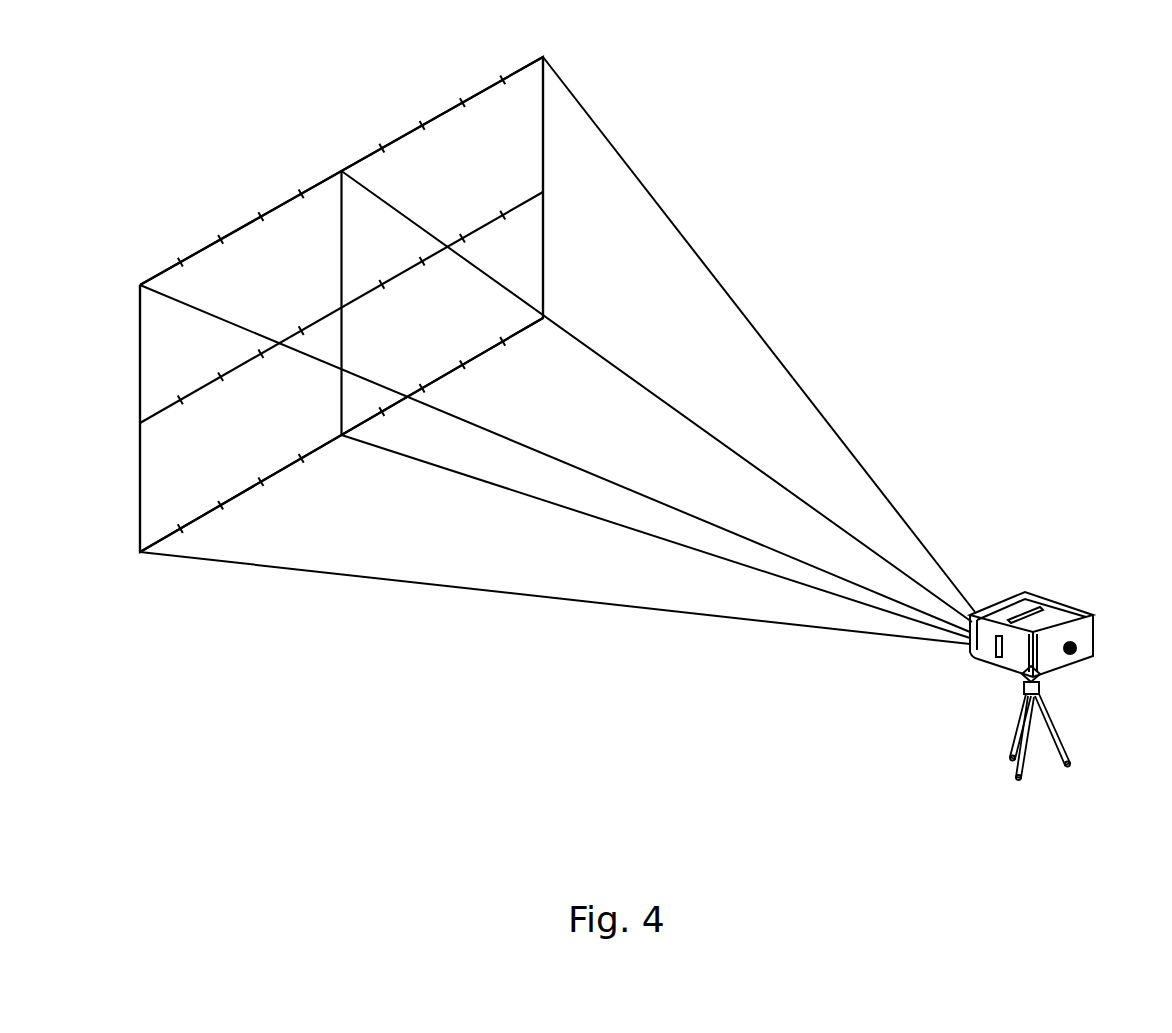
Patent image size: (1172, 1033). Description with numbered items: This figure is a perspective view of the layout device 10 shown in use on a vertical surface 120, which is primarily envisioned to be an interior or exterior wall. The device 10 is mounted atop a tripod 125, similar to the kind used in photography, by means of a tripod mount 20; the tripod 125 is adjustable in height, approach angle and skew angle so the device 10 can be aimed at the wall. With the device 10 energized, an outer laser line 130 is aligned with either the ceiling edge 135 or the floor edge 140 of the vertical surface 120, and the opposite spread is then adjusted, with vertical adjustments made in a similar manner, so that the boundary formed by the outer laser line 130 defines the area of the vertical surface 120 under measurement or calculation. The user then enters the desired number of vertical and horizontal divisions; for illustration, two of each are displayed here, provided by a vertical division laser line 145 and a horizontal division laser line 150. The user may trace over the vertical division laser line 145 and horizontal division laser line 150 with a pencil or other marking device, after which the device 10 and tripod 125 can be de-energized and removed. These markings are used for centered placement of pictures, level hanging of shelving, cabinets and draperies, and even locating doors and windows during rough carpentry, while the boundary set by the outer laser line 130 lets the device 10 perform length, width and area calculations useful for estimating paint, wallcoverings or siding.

The layout device 10 is at (1057, 598).
The tripod mount 20 is at (1043, 688).
The vertical surface 120 is at (510, 165).
The tripod 125 is at (1027, 695).
The outer laser line 130 is at (238, 225).
The ceiling edge 135 is at (362, 157).
The floor edge 140 is at (318, 457).
The vertical division laser line 145 is at (340, 195).
The horizontal division laser line 150 is at (158, 413).